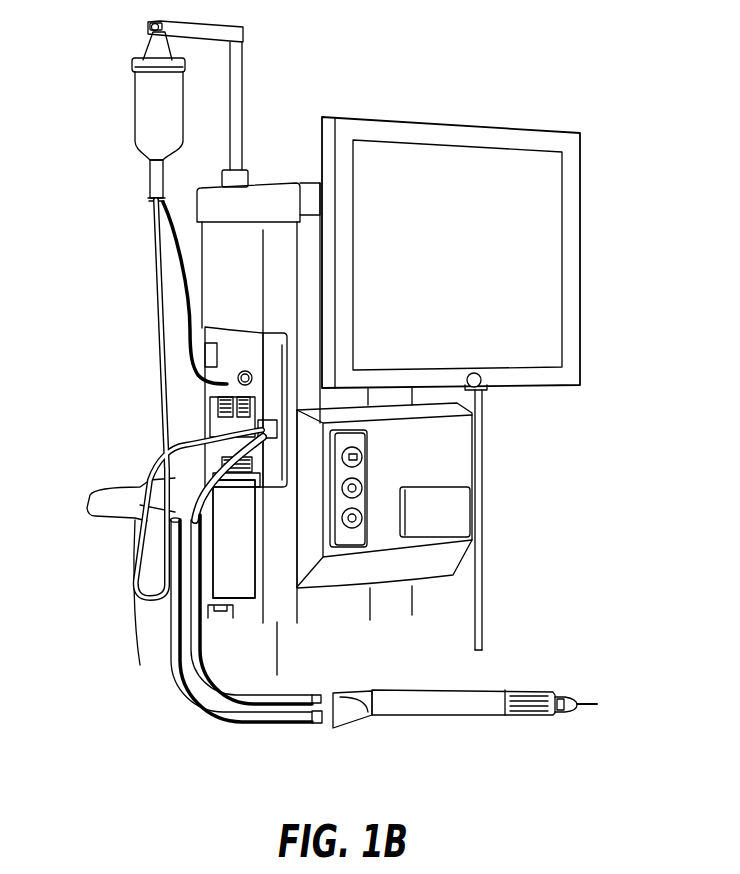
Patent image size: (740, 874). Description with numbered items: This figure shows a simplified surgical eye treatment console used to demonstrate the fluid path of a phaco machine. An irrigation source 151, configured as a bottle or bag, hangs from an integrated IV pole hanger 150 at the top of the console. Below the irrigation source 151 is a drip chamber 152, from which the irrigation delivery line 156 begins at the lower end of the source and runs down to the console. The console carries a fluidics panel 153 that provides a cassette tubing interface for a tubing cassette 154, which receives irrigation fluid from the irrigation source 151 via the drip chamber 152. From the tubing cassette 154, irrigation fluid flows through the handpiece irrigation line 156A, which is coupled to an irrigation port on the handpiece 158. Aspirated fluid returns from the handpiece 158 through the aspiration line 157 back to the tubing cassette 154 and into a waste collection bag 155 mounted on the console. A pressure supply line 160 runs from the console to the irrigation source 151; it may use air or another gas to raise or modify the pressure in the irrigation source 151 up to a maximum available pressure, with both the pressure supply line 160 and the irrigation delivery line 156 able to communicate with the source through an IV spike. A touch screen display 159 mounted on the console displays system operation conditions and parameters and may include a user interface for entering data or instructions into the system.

The IV pole hanger 150 is at (138, 28).
The irrigation source 151 is at (127, 108).
The drip chamber 152 is at (137, 190).
The fluidics panel 153 is at (227, 353).
The tubing cassette 154 is at (224, 415).
The waste collection bag 155 is at (227, 546).
The irrigation delivery line 156 is at (141, 238).
The handpiece irrigation line 156A is at (165, 664).
The aspiration line 157 is at (238, 674).
The handpiece 158 is at (507, 681).
The touch screen display 159 is at (538, 356).
The pressure supply line 160 is at (173, 316).